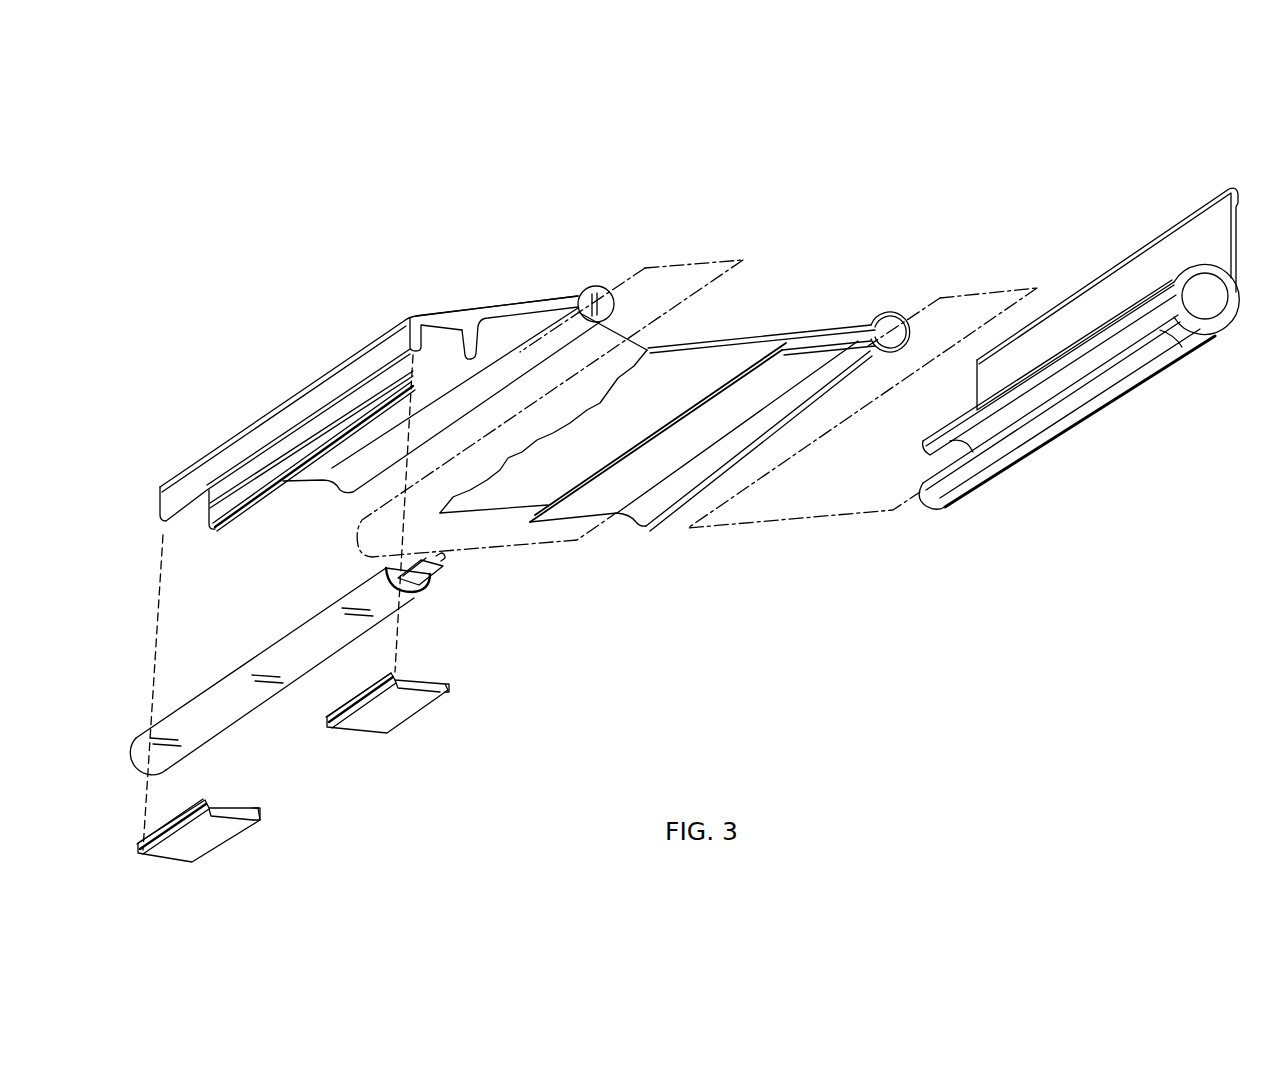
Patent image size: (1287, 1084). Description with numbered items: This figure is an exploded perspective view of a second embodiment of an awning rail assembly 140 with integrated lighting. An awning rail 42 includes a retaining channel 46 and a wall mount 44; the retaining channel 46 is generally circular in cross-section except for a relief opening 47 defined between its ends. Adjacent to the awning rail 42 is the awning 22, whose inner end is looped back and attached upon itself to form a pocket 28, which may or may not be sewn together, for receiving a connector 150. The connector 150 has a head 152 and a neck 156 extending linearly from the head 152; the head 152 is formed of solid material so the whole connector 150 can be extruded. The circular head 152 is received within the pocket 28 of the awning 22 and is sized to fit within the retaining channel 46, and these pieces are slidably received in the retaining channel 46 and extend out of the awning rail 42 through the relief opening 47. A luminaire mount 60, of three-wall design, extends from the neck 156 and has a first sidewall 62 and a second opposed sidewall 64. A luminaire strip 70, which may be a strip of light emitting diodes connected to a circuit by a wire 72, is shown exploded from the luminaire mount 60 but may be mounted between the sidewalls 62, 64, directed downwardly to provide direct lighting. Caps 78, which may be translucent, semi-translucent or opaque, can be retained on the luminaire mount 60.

The awning rail assembly 140 is at (300, 170).
The luminaire mount 60 is at (415, 372).
The first sidewall 62 is at (284, 412).
The second opposed sidewall 64 is at (272, 494).
The neck 156 is at (530, 300).
The connector 150 is at (623, 257).
The head 152 is at (604, 290).
The awning 22 is at (708, 376).
The pocket 28 is at (900, 346).
The awning rail 42 is at (1095, 300).
The wall mount 44 is at (1238, 232).
The relief opening 47 is at (1170, 334).
The retaining channel 46 is at (905, 525).
The luminaire strip 70 is at (302, 664).
The wire 72 is at (430, 576).
The cap 78 is at (418, 710).